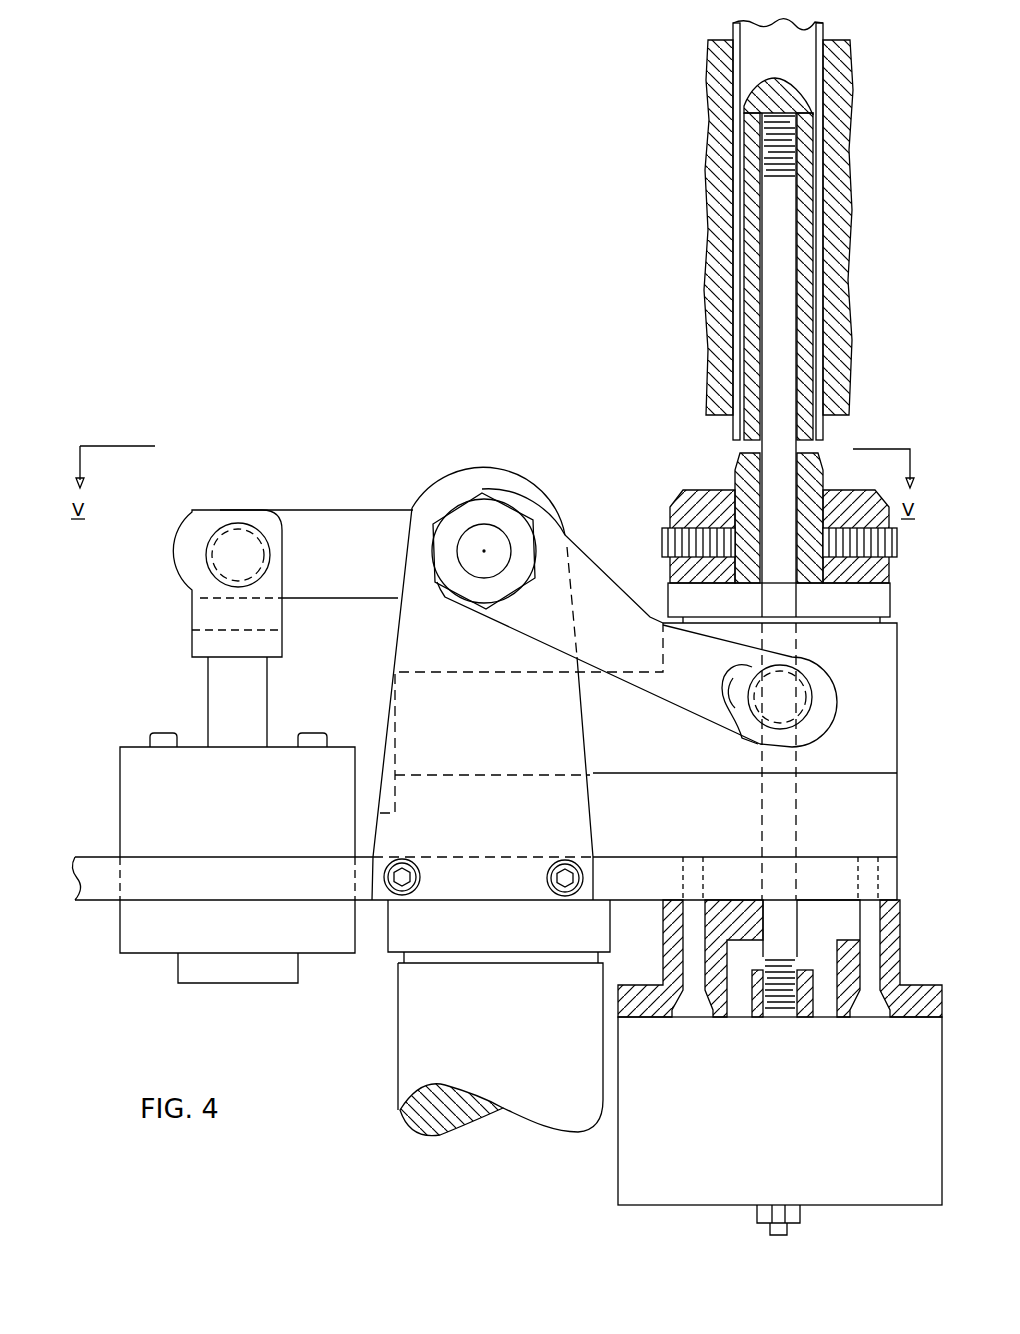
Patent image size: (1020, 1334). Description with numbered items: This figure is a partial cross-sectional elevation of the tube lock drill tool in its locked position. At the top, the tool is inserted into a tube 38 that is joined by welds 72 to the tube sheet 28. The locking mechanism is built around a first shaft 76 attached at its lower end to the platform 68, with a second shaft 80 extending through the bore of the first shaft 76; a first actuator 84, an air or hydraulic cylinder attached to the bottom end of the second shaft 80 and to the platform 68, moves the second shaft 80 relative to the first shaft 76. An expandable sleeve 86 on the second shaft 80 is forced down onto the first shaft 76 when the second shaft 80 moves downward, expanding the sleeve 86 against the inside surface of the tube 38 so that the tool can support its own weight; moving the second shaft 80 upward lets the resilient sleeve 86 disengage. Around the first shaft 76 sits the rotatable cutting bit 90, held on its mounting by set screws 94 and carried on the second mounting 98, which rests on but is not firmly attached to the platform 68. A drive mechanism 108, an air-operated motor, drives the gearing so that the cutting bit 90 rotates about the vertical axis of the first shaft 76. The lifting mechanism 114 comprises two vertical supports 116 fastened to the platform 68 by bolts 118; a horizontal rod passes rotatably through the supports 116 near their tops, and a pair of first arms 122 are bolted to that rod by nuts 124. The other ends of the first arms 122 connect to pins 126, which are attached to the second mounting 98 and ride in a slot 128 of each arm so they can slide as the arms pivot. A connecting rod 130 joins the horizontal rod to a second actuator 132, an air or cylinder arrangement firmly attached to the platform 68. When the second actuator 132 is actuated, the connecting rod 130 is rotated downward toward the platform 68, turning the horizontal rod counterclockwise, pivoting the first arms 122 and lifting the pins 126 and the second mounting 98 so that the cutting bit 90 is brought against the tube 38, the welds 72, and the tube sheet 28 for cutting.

The tube sheet 28 is at (726, 201).
The tube 38 is at (728, 395).
The platform 68 is at (245, 895).
The welds 72 is at (826, 420).
The first shaft 76 is at (808, 390).
The second shaft 80 is at (783, 283).
The first actuator 84 is at (771, 1139).
The expandable sleeve 86 is at (822, 238).
The cutting bit 90 is at (820, 481).
The set screws 94 is at (896, 545).
The second mounting 98 is at (871, 698).
The drive mechanism 108 is at (510, 1039).
The lifting mechanism 114 is at (440, 462).
The vertical supports 116 is at (390, 683).
The bolts 118 is at (568, 878).
The first arms 122 is at (672, 714).
The nuts 124 is at (483, 493).
The pins 126 is at (810, 715).
The slot 128 is at (757, 740).
The connecting rod 130 is at (363, 520).
The second actuator 132 is at (254, 820).